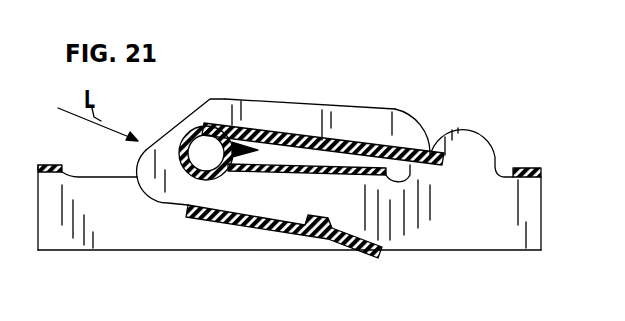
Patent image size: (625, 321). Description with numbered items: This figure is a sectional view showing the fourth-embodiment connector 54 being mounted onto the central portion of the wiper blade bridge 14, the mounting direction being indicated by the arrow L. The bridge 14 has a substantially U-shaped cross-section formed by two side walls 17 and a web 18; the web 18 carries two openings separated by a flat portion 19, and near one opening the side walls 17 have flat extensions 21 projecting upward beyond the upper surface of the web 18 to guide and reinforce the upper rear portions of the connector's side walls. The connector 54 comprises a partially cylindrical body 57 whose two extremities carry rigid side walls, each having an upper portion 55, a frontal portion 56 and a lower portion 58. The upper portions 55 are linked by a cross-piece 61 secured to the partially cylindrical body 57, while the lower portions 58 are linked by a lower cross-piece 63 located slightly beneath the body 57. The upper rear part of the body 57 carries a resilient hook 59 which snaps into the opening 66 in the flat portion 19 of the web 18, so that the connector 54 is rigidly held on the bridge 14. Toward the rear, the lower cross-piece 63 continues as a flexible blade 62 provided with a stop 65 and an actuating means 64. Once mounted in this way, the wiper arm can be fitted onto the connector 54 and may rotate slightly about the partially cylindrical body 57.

The wiper blade bridge 14 is at (163, 253).
The side walls 17 is at (46, 222).
The web 18 is at (50, 164).
The flat portion 19 is at (367, 173).
The flat extensions 21 is at (465, 137).
The connector 54 is at (297, 104).
The upper portion 55 is at (397, 127).
The frontal portion 56 is at (147, 167).
The partially cylindrical body 57 is at (188, 142).
The lower portion 58 is at (255, 178).
The resilient hook 59 is at (253, 147).
The cross-piece 61 is at (363, 147).
The flexible blade 62 is at (273, 226).
The lower cross-piece 63 is at (197, 212).
The actuating means 64 is at (365, 253).
The stop 65 is at (307, 228).
The opening 66 is at (328, 166).